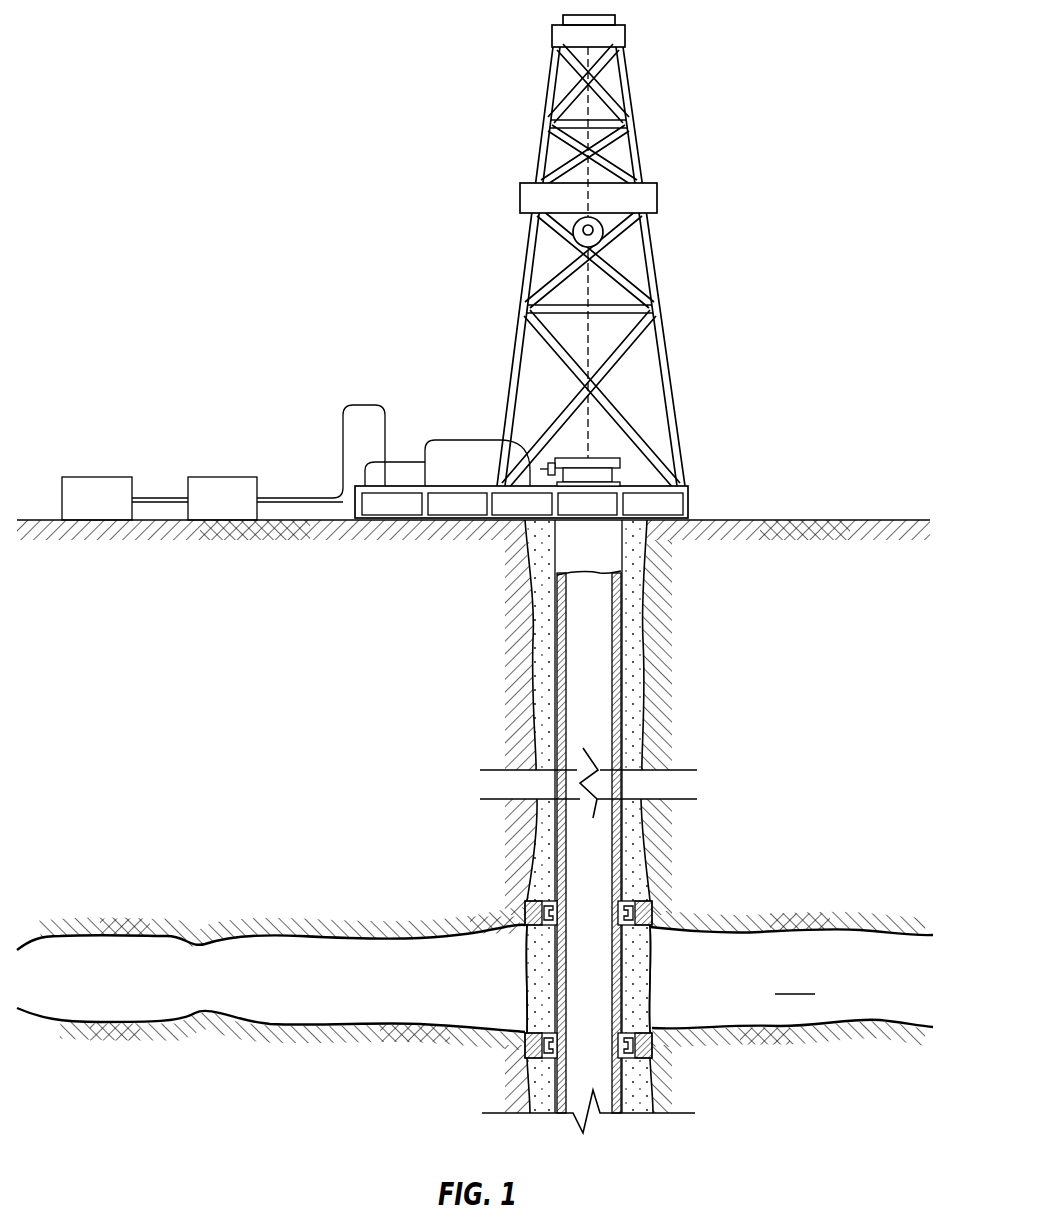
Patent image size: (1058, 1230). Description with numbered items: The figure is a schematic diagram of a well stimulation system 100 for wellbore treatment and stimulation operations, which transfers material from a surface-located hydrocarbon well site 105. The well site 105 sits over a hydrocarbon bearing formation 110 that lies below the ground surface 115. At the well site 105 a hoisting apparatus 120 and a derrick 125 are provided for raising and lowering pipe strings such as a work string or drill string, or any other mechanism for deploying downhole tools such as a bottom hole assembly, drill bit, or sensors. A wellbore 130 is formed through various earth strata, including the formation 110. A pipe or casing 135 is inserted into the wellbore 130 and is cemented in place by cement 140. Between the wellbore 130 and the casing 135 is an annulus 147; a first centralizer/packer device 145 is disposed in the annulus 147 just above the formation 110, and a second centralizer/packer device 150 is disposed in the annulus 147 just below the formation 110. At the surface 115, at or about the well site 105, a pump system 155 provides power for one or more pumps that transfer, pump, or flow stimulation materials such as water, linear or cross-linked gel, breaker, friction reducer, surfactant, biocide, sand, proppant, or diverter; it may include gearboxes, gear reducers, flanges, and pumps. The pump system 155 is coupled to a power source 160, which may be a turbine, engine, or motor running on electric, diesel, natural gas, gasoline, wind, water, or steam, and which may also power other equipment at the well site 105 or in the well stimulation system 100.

The well stimulation system 100 is at (266, 76).
The hydrocarbon well site 105 is at (688, 493).
The hydrocarbon bearing formation 110 is at (475, 979).
The ground surface 115 is at (840, 521).
The hoisting apparatus 120 is at (620, 465).
The derrick 125 is at (655, 185).
The wellbore 130 is at (643, 845).
The casing 135 is at (567, 810).
The cement 140 is at (640, 642).
The first centralizer/packer device 145 is at (650, 910).
The annulus 147 is at (643, 962).
The second centralizer/packer device 150 is at (652, 1053).
The pump system 155 is at (222, 477).
The power source 160 is at (97, 477).